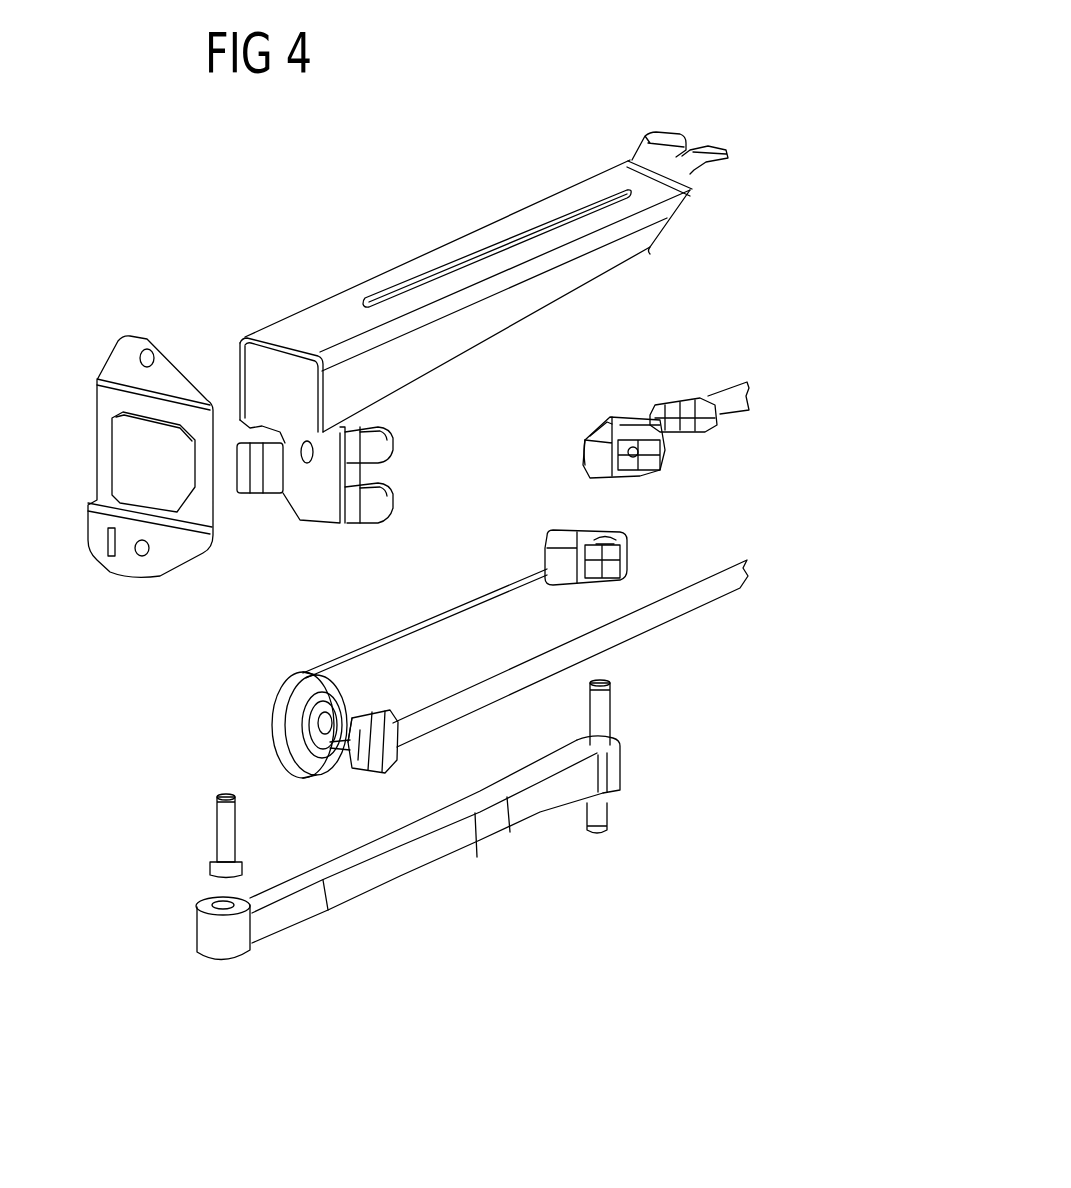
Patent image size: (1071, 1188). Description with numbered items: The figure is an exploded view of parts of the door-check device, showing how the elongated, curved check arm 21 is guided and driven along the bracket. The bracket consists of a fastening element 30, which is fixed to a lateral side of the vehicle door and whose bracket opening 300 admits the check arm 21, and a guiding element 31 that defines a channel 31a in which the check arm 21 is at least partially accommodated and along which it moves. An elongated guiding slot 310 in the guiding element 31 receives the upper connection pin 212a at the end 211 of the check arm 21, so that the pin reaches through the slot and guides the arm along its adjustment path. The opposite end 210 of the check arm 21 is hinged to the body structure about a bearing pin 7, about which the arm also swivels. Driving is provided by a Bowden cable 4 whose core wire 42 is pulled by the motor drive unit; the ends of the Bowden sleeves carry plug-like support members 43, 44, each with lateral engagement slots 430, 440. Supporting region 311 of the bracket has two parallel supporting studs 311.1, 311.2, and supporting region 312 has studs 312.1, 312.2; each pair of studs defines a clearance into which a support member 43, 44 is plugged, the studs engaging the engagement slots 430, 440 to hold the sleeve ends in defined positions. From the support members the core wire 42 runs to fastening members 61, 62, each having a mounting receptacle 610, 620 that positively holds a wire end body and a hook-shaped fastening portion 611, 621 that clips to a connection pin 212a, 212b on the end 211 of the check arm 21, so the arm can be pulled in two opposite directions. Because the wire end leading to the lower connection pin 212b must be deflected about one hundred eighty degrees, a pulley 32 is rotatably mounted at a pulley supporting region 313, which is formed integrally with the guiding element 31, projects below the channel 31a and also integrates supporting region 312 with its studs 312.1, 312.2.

The Bowden cable 4 is at (745, 606).
The bearing pin 7 is at (223, 823).
The check arm 21 is at (448, 859).
The fastening element 30 is at (117, 415).
The guiding element 31 is at (516, 308).
The channel 31a is at (253, 363).
The pulley 32 is at (270, 695).
The core wire 42 is at (453, 615).
The support member 43 is at (730, 378).
The support member 44 is at (392, 725).
The fastening member 61 is at (649, 403).
The fastening member 62 is at (601, 586).
The end of check arm 210 is at (232, 948).
The end of check arm 211 is at (617, 767).
The connection pin 212a is at (597, 708).
The connection pin 212b is at (595, 822).
The bracket opening 300 is at (137, 445).
The guiding slot 310 is at (429, 275).
The supporting region 311 is at (706, 113).
The supporting stud 311.1 is at (640, 152).
The supporting stud 311.2 is at (711, 152).
The supporting region 312 is at (414, 483).
The supporting stud 312.1 is at (387, 440).
The supporting stud 312.2 is at (367, 505).
The pulley supporting region 313 is at (308, 473).
The engagement slot 430 is at (716, 422).
The engagement slot 440 is at (360, 763).
The mounting receptacle 610 is at (663, 457).
The hook-shaped fastening portion 611 is at (595, 435).
The mounting receptacle 620 is at (603, 567).
The hook-shaped fastening portion 621 is at (620, 533).